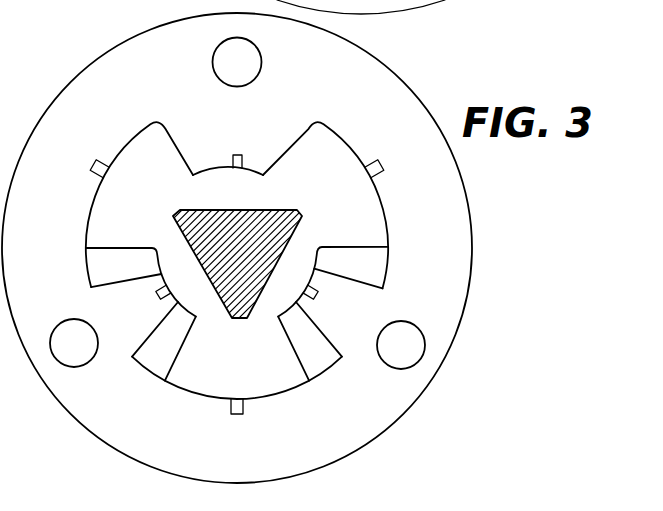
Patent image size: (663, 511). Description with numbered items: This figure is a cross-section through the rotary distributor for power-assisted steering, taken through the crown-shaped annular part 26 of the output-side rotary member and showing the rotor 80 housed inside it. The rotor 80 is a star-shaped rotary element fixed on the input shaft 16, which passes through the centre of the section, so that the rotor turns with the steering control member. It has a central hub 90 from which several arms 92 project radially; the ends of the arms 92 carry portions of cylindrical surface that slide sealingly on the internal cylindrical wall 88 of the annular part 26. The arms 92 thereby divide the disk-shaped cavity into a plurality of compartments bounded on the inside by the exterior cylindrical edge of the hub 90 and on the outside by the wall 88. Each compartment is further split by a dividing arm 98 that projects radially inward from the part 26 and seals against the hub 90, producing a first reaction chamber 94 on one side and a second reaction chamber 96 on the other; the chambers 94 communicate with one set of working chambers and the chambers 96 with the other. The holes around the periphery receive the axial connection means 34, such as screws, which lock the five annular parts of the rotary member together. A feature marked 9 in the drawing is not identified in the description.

The annular part 26 is at (393, 110).
The rotary element 80 is at (371, 225).
The central hub 90 is at (228, 184).
The tooth insert 9 is at (182, 118).
The internal cylindrical wall 88 is at (322, 364).
The first reaction chamber 94 is at (96, 266).
The second reaction chamber 96 is at (379, 271).
The dividing arm 98 is at (251, 153).
The arms 92 is at (134, 153).
The axial connection means 34 is at (244, 78).
The input shaft 16 is at (270, 249).